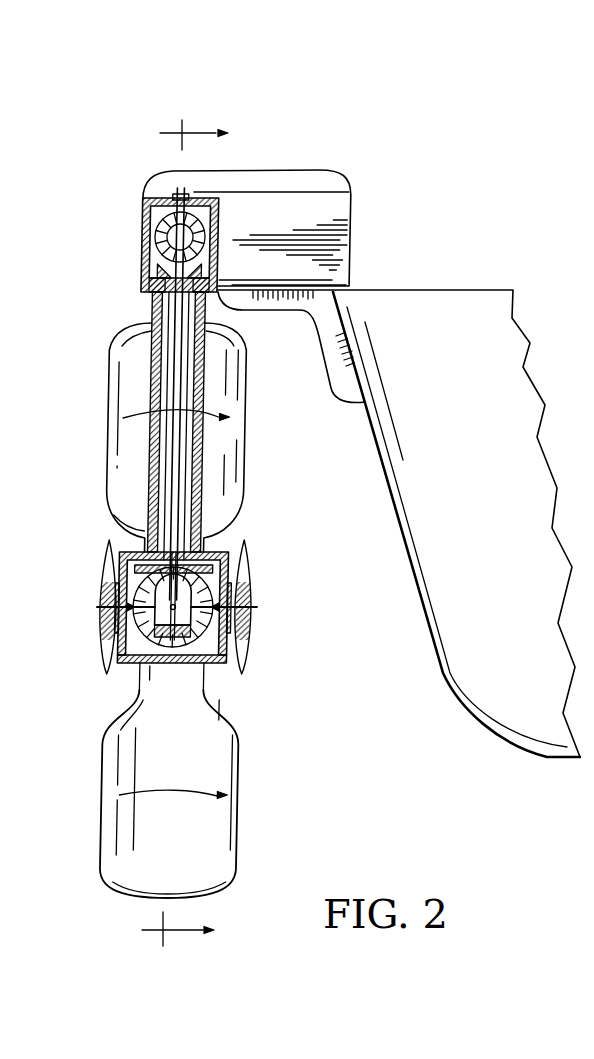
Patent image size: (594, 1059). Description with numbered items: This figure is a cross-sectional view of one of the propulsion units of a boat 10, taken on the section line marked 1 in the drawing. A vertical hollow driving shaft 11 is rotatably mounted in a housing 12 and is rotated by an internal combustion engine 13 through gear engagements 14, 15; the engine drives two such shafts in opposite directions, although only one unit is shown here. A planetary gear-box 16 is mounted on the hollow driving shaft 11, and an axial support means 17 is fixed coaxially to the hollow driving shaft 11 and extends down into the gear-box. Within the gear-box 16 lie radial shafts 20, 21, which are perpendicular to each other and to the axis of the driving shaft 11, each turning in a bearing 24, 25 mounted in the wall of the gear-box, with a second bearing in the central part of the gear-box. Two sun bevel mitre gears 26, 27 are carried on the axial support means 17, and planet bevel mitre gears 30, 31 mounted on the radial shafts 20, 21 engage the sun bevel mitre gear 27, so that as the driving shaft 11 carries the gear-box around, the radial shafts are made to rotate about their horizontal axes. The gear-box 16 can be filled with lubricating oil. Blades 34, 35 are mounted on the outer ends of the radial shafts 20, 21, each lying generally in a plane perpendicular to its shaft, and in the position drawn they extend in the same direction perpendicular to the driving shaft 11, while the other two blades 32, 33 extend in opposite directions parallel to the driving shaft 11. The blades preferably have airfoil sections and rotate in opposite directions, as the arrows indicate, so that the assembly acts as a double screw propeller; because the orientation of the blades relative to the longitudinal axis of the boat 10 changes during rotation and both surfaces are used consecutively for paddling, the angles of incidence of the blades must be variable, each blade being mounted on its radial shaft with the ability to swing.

The section line 1- 1 is at (195, 533).
The boat 10 is at (460, 290).
The hollow driving shaft 11 is at (153, 372).
The housing 12 is at (152, 314).
The internal combustion engine 13 is at (313, 183).
The gear engagement 14 is at (143, 233).
The gear engagement 15 is at (143, 247).
The planetary gear-box 16 is at (125, 552).
The axial support means 17 is at (152, 480).
The radial shaft 20 is at (104, 607).
The radial shaft 21 is at (256, 607).
The bearing 24 is at (110, 626).
The bearing 25 is at (252, 629).
The sun bevel mitre gear 26 is at (222, 556).
The sun bevel mitre gear 27 is at (148, 663).
The planet bevel mitre gear 30 is at (126, 662).
The planet bevel mitre gear 31 is at (220, 665).
The blade 32 is at (235, 402).
The blade 33 is at (118, 832).
The blade 34 is at (106, 563).
The blade 35 is at (252, 568).